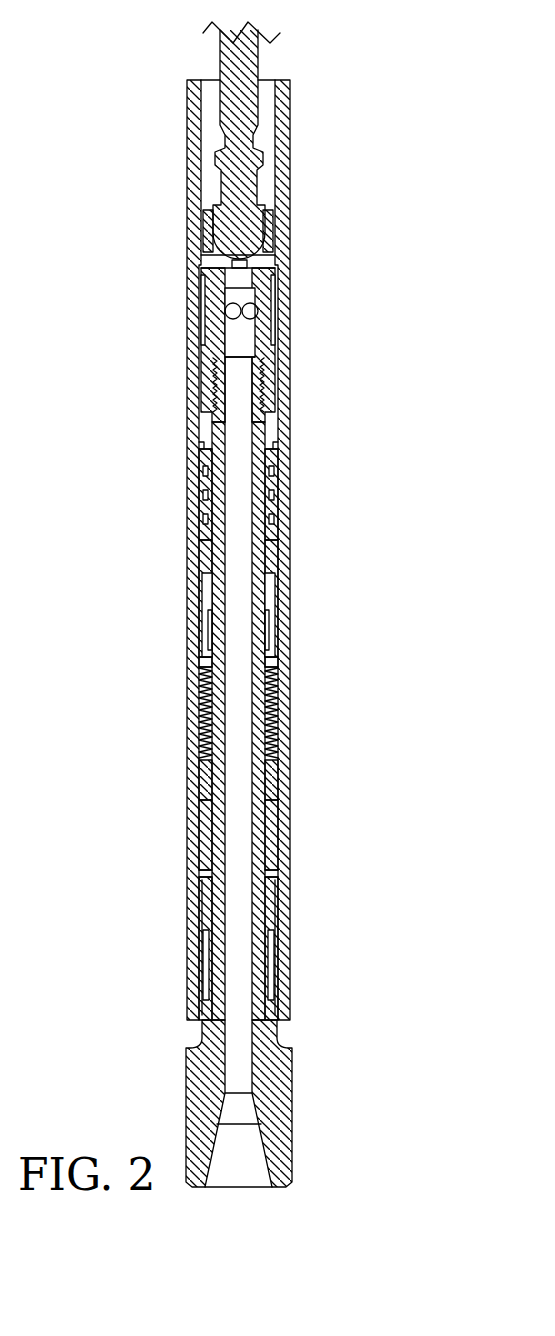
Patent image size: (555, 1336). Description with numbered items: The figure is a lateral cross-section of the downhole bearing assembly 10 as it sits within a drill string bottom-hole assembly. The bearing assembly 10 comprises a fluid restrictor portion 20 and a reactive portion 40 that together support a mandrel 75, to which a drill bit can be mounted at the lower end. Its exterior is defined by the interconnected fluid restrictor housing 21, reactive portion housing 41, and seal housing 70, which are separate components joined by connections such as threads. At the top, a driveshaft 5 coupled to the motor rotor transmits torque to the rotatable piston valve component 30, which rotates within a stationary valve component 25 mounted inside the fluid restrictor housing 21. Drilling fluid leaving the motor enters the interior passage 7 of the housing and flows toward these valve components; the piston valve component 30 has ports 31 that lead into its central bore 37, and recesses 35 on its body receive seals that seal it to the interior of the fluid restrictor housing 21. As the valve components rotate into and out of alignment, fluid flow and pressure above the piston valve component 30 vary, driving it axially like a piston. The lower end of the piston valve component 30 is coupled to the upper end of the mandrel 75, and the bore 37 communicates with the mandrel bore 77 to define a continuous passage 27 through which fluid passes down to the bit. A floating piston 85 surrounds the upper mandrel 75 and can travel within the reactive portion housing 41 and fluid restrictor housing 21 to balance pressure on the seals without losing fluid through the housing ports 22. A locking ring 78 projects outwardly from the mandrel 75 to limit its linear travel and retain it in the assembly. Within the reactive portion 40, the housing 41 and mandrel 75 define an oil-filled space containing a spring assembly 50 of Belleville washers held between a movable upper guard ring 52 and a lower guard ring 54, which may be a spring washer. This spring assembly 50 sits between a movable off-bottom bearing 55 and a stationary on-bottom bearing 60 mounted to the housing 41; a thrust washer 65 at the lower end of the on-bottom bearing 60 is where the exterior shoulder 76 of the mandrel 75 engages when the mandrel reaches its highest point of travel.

The driveshaft 5 is at (248, 171).
The passage 7 is at (272, 103).
The downhole bearing assembly 10 is at (158, 122).
The fluid restrictor portion 20 is at (118, 229).
The fluid restrictor housing 21 is at (283, 195).
The housing ports 22 is at (287, 442).
The stationary valve component 25 is at (281, 290).
The passage 27 is at (273, 453).
The piston valve component 30 is at (215, 330).
The ports 31 is at (254, 313).
The recesses 35 is at (202, 410).
The bore 37 is at (243, 341).
The reactive portion 40 is at (118, 462).
The reactive portion housing 41 is at (203, 553).
The spring assembly 50 is at (203, 723).
The upper guard ring 52 is at (270, 667).
The lower guard ring 54 is at (200, 760).
The off-bottom bearing 55 is at (205, 663).
The on-bottom bearing 60 is at (203, 823).
The thrust washer 65 is at (272, 870).
The seal housing 70 is at (197, 950).
The mandrel 75 is at (212, 1095).
The exterior shoulder 76 is at (278, 880).
The bore 77 is at (272, 942).
The locking ring 78 is at (268, 653).
The floating piston 85 is at (275, 497).